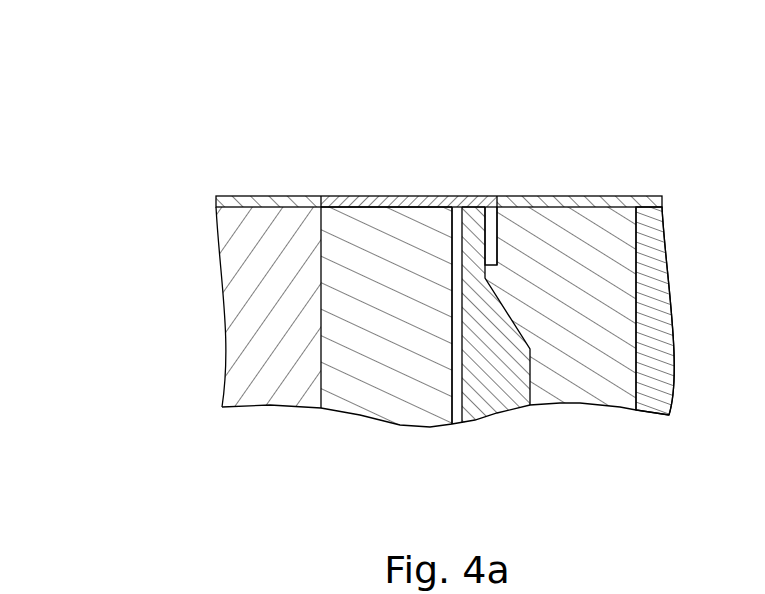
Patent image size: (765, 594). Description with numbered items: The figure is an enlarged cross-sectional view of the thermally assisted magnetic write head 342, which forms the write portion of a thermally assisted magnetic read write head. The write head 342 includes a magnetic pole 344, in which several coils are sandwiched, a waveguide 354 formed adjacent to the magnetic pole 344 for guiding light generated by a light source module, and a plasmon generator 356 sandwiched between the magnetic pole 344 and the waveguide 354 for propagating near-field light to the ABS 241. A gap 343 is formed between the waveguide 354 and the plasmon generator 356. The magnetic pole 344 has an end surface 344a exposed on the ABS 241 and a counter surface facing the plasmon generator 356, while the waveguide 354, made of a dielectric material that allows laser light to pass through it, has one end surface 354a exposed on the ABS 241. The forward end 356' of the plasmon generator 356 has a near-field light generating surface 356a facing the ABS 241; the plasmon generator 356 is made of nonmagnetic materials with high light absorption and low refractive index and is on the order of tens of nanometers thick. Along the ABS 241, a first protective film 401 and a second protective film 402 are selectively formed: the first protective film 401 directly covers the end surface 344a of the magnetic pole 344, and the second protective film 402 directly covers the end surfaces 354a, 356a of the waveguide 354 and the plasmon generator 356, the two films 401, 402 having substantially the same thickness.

The thermally assisted magnetic write head 342 is at (96, 33).
The ABS 241 is at (215, 198).
The first protective film 401 is at (248, 202).
The second protective film 402 is at (415, 203).
The end surface of the waveguide 354a is at (353, 205).
The waveguide 354 is at (373, 380).
The gap 343 is at (455, 415).
The near-field light generating surface 356a is at (472, 223).
The plasmon generator 356 is at (501, 350).
The forward end of the plasmon generator 356' is at (523, 175).
The magnetic pole 344 is at (583, 392).
The end surface of the magnetic pole 344a is at (572, 205).